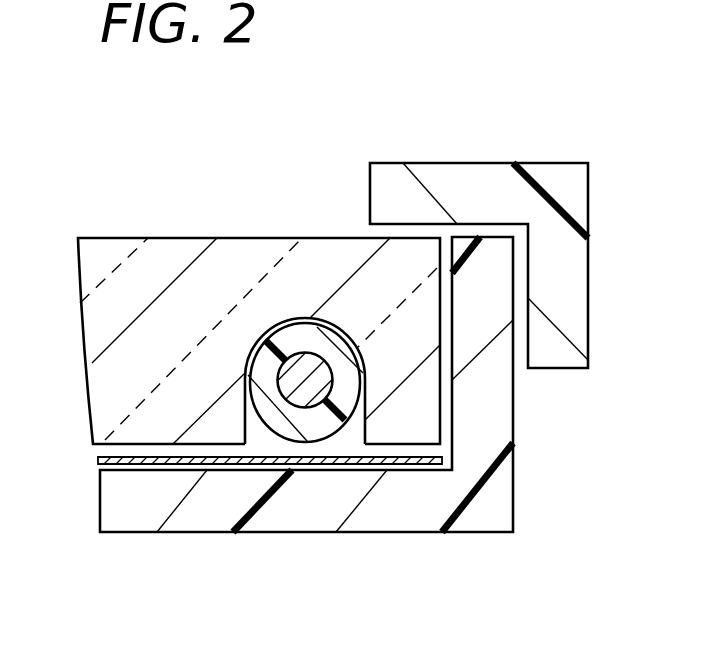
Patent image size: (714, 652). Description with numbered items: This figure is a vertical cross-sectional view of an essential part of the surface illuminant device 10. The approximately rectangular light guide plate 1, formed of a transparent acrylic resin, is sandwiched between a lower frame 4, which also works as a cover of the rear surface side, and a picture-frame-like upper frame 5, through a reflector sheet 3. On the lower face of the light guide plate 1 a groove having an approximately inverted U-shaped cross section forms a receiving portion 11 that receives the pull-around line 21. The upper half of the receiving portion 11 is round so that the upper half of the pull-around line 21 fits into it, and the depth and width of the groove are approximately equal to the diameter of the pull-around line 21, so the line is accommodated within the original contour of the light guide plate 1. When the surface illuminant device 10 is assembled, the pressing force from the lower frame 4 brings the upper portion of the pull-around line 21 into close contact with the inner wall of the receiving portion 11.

The surface illuminant device 10 is at (331, 97).
The light guide plate 1 is at (169, 263).
The receiving portion 11 is at (247, 430).
The pull-around line 21 is at (296, 340).
The reflector sheet 3 is at (98, 461).
The lower frame 4 is at (423, 512).
The upper frame 5 is at (553, 358).